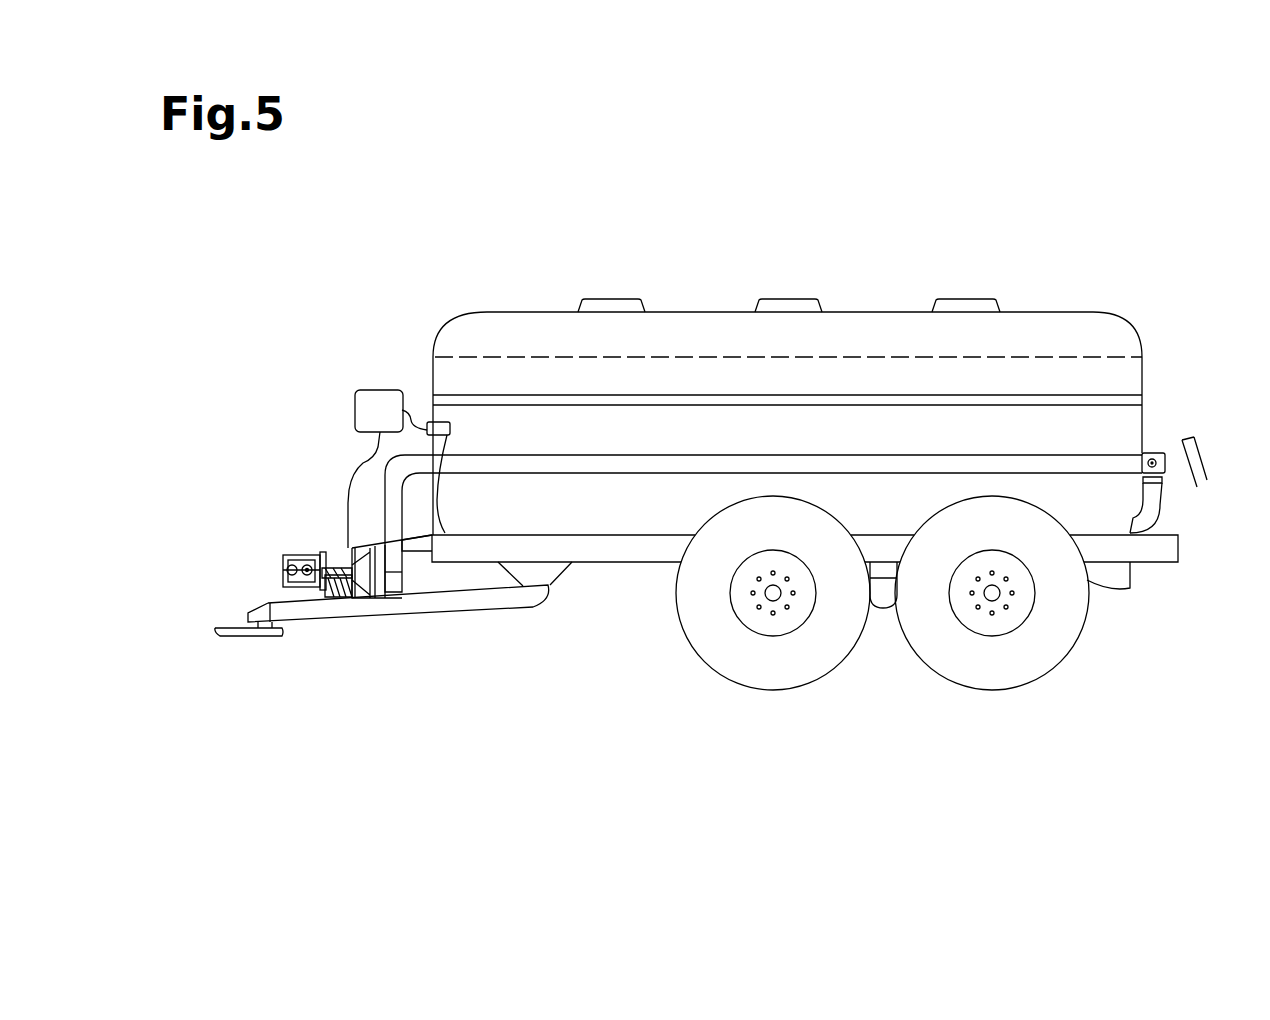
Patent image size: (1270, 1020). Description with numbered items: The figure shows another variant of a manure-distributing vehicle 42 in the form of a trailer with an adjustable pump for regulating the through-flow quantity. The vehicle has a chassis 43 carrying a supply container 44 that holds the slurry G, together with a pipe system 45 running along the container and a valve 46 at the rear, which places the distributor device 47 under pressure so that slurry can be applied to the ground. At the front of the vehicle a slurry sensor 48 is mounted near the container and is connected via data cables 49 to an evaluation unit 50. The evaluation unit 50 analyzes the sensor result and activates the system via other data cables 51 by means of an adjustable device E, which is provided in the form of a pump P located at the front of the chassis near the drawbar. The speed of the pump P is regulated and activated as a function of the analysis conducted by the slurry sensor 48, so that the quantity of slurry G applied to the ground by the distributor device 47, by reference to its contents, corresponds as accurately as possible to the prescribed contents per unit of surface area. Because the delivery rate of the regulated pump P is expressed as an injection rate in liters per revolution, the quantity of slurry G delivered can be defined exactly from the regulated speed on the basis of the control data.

The manure-distributing vehicle 42 is at (403, 354).
The chassis 43 is at (603, 552).
The supply container 44 is at (1020, 336).
The pipe system 45 is at (1152, 507).
The valve 46 is at (1155, 460).
The distributor device 47 is at (1203, 445).
The slurry sensor 48 is at (447, 422).
The data cables 49 is at (404, 404).
The evaluation unit 50 is at (363, 410).
The other data cables 51 is at (347, 482).
The adjustable device E is at (296, 555).
The pump P is at (394, 583).
The slurry G is at (864, 352).